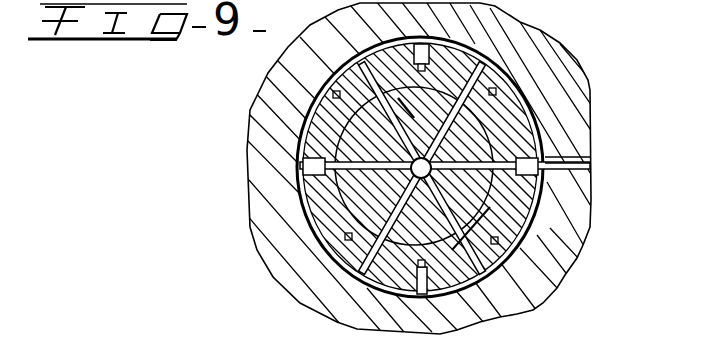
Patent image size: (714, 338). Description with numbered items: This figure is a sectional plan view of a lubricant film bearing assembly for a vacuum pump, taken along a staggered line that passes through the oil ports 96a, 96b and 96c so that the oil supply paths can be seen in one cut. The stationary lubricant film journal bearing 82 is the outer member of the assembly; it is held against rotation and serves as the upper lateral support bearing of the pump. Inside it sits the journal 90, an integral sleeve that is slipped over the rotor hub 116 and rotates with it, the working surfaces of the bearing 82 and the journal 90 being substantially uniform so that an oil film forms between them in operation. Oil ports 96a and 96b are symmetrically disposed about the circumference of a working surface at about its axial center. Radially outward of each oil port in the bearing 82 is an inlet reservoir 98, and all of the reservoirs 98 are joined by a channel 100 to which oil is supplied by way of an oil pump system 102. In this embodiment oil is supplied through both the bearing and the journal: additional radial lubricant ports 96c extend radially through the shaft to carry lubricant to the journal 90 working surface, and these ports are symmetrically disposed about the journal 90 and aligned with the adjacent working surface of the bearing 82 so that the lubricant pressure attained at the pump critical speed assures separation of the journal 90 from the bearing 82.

The lubricant film journal bearing 82 is at (520, 112).
The journal 90 is at (524, 231).
The channel 100 is at (549, 143).
The oil port 96a is at (313, 166).
The oil port 96b is at (526, 193).
The radial lubricant port 96c is at (480, 148).
The inlet reservoir 98 is at (304, 157).
The oil pump system 102 is at (580, 168).
The rotor hub 116 is at (370, 45).